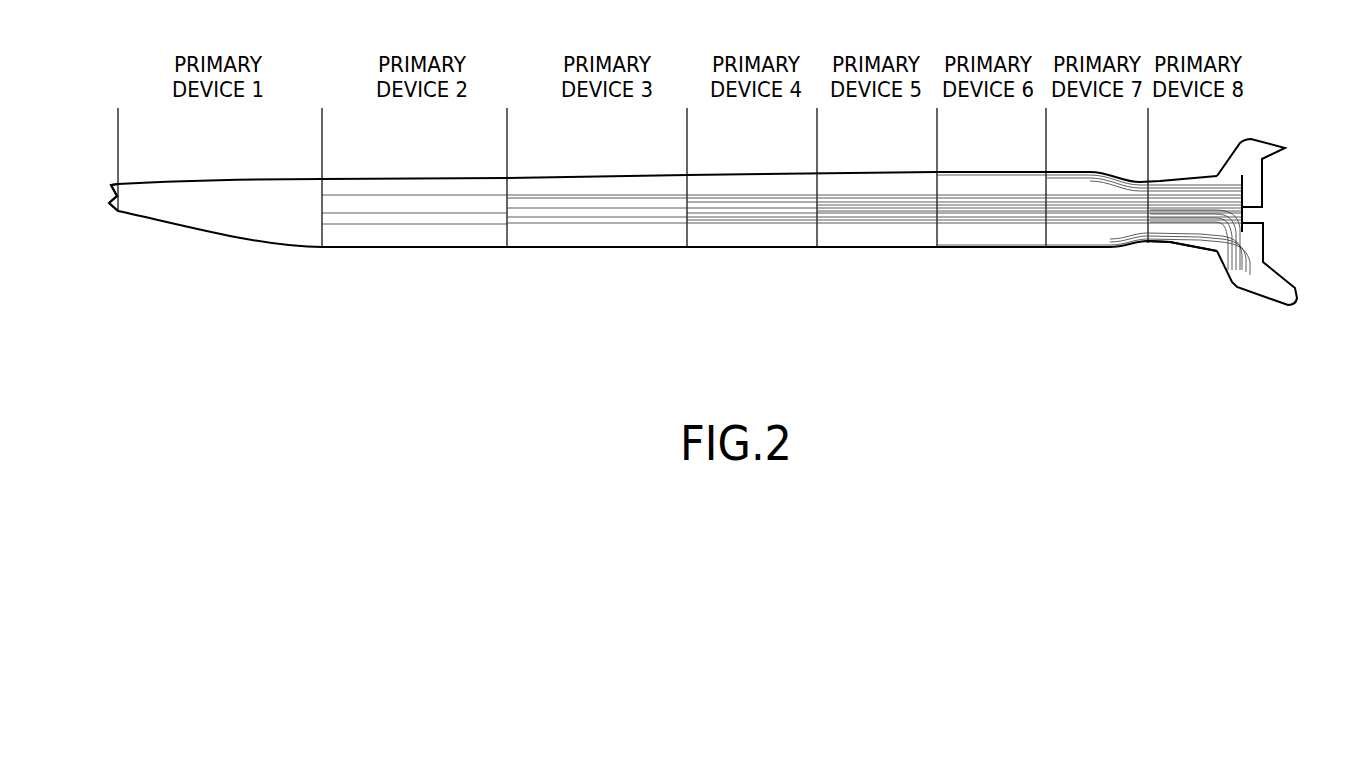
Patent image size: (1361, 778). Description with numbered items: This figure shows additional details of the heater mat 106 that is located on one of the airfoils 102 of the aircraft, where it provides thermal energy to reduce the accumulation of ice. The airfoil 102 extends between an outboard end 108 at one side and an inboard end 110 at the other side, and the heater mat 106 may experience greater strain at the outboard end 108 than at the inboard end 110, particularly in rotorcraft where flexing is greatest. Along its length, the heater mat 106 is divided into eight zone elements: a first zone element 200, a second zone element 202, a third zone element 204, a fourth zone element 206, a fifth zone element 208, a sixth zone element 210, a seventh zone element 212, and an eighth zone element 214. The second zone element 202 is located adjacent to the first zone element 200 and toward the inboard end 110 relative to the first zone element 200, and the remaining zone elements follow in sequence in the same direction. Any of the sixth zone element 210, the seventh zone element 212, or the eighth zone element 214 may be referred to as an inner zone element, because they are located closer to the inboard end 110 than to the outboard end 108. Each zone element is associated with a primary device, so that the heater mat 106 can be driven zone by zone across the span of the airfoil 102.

The airfoil 102 is at (110, 178).
The heater mat 106 is at (105, 212).
The outboard end 108 is at (109, 201).
The inboard end 110 is at (1243, 188).
The first zone element 200 is at (250, 223).
The second zone element 202 is at (417, 237).
The third zone element 204 is at (589, 237).
The fourth zone element 206 is at (742, 237).
The fifth zone element 208 is at (872, 237).
The sixth zone element 210 is at (992, 237).
The seventh zone element 212 is at (1083, 237).
The eighth zone element 214 is at (1182, 235).